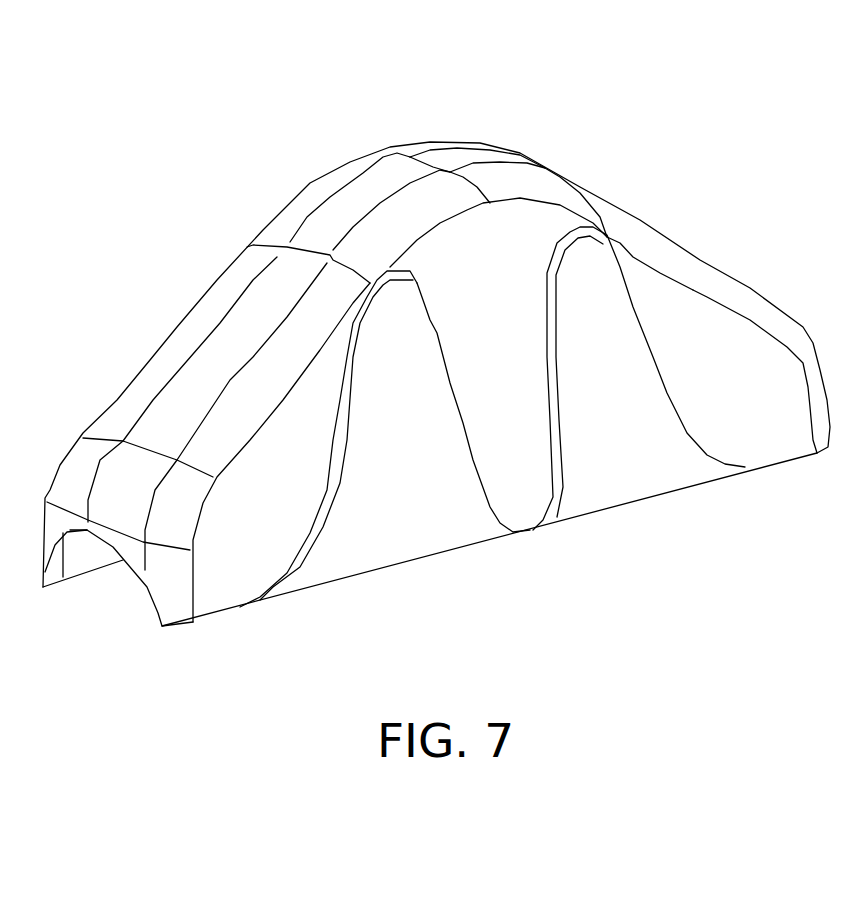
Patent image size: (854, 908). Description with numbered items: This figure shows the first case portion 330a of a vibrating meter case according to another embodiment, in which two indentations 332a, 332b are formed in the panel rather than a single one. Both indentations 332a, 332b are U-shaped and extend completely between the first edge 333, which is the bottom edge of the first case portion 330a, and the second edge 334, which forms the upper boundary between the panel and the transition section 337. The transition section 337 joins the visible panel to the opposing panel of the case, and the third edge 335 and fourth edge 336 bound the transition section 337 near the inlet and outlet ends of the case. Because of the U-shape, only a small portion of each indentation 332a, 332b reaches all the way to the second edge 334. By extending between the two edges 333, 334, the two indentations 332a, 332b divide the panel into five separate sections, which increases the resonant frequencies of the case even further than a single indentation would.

The first case portion 330a is at (653, 90).
The first indentation 332a is at (430, 424).
The second indentation 332b is at (623, 367).
The first edge 333 is at (597, 511).
The second edge 334 is at (493, 202).
The third edge 335 is at (193, 572).
The fourth edge 336 is at (808, 398).
The transition section 337 is at (203, 363).